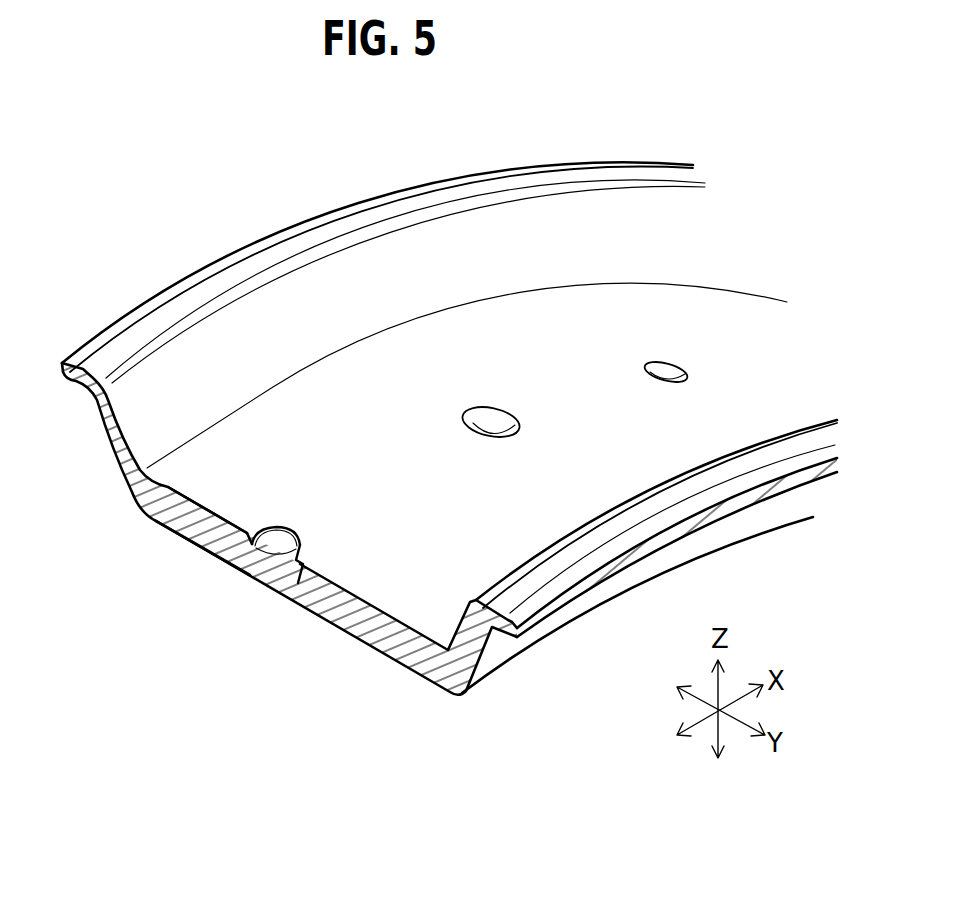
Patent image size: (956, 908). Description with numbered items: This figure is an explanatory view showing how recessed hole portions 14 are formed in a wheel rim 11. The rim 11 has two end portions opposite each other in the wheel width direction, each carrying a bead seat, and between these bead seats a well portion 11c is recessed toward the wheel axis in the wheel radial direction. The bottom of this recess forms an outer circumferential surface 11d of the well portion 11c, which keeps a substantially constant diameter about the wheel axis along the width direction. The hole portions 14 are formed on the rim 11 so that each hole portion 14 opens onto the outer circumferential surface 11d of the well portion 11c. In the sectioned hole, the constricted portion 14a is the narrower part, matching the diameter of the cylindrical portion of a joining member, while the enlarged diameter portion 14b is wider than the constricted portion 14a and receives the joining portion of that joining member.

The rim 11 is at (469, 192).
The well portion 11c is at (213, 467).
The outer circumferential surface 11d is at (150, 517).
The hole portion 14 is at (665, 364).
The constricted portion 14a is at (275, 528).
The enlarged diameter portion 14b is at (253, 553).